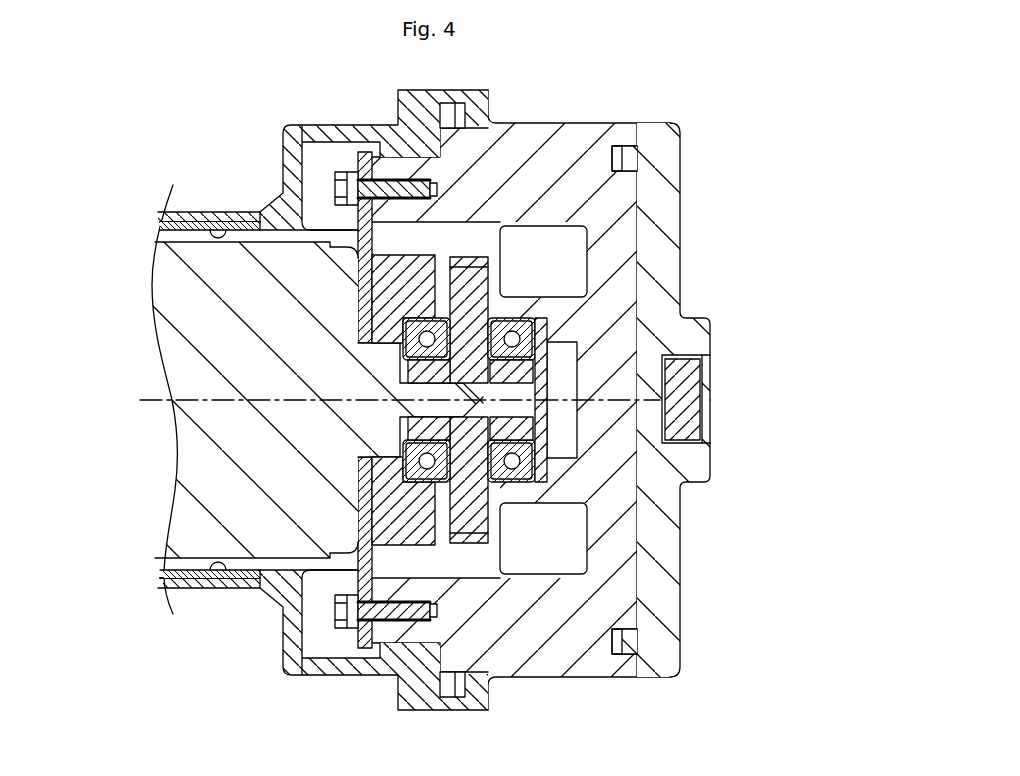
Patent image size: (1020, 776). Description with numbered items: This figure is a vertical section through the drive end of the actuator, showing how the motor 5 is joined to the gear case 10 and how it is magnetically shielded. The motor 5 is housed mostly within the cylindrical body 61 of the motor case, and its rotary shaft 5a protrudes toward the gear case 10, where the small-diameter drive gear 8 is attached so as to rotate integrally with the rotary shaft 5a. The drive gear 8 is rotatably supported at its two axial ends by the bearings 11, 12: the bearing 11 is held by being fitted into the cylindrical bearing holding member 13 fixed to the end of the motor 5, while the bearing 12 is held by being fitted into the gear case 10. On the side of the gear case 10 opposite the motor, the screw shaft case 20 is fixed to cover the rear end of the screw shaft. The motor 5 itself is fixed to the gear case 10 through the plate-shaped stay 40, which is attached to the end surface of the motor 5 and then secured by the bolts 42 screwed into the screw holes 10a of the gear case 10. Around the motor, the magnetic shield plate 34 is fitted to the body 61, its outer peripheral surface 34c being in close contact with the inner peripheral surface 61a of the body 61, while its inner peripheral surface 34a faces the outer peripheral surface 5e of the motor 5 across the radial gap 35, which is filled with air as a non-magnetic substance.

The motor 5 is at (200, 543).
The rotary shaft 5a is at (598, 427).
The outer peripheral surface 5e is at (216, 238).
The drive gear 8 is at (473, 277).
The gear case 10 is at (572, 145).
The screw holes 10a is at (400, 186).
The bearing 11 is at (422, 461).
The bearing 12 is at (514, 468).
The bearing holding member 13 is at (422, 548).
The screw shaft case 20 is at (662, 208).
The magnetic shield plate 34 is at (180, 212).
The inner peripheral surface 34a is at (157, 256).
The outer peripheral surface 34c is at (212, 221).
The radial gap 35 is at (197, 243).
The stay 40 is at (358, 227).
The bolts 42 is at (353, 176).
The body 61 is at (228, 212).
The inner peripheral surface 61a is at (258, 216).